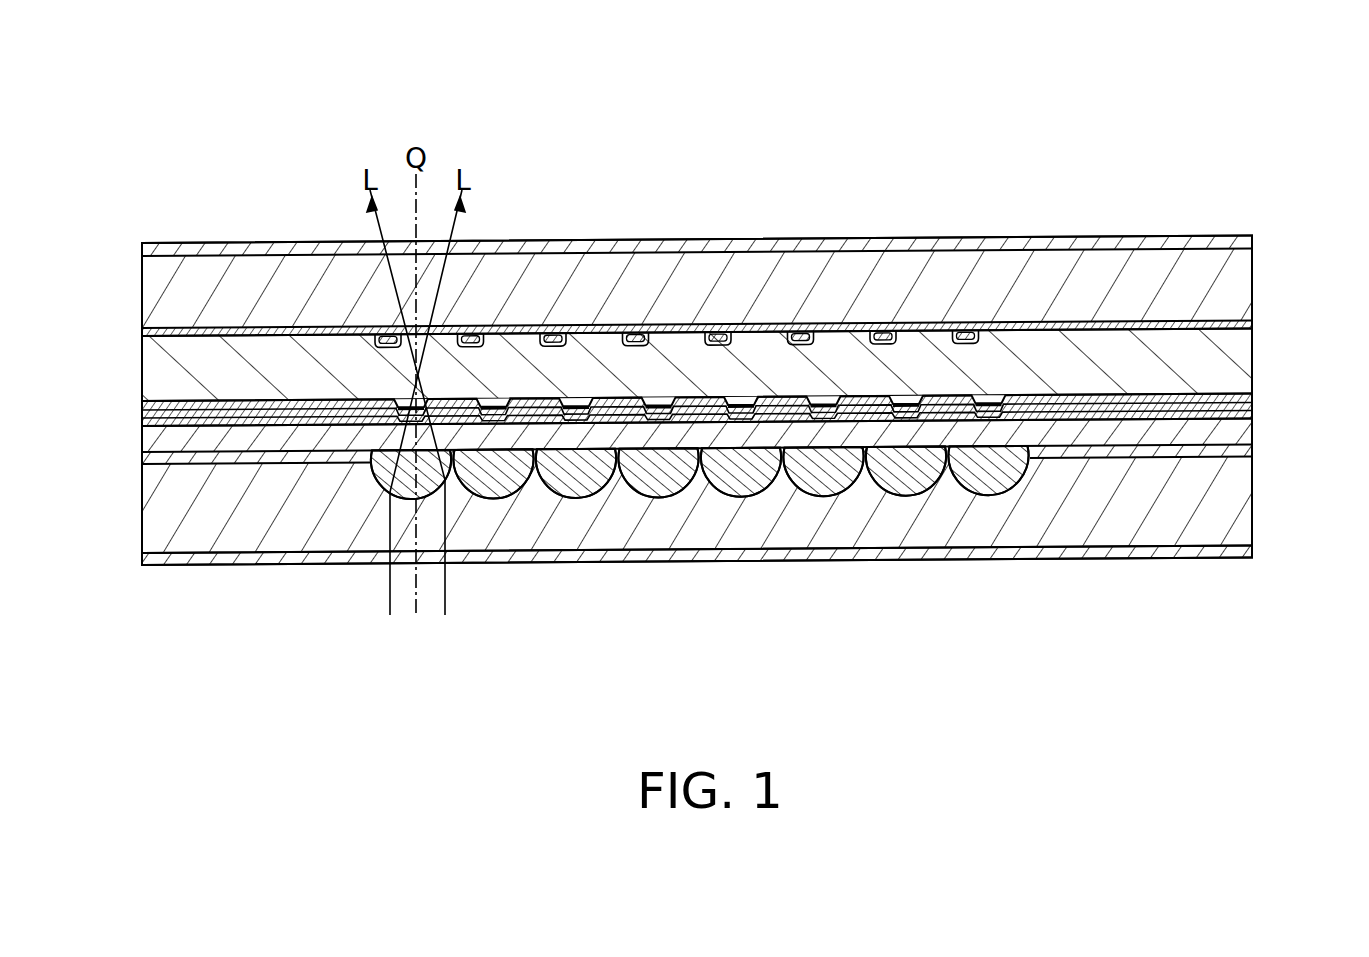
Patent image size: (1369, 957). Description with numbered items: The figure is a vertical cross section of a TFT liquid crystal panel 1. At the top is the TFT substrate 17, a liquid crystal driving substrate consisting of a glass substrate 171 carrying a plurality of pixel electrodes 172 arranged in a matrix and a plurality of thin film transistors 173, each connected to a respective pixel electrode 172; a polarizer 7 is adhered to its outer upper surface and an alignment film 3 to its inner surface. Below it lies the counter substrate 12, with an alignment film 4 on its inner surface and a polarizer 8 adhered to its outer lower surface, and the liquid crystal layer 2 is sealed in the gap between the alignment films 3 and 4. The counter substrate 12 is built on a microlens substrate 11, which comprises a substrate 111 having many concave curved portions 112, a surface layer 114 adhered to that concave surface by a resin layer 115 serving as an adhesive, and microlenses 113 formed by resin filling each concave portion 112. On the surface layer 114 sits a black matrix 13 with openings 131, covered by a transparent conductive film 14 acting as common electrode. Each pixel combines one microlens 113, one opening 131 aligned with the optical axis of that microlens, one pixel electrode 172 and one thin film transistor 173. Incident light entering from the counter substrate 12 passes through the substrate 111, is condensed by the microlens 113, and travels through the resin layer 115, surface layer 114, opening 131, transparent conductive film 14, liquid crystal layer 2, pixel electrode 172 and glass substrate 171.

The liquid crystal panel 1 is at (1195, 225).
The TFT substrate 17 is at (130, 289).
The polarizer 7 is at (1253, 236).
The glass substrate 171 is at (1237, 273).
The alignment film 3 is at (1258, 323).
The thin film transistor 173 is at (630, 328).
The pixel electrode 172 is at (827, 335).
The liquid crystal layer 2 is at (158, 373).
The counter substrate 12 is at (1257, 520).
The alignment film 4 is at (1255, 393).
The transparent conductive film 14 is at (1255, 403).
The black matrix 13 is at (1255, 413).
The opening 131 is at (909, 415).
The microlens substrate 11 is at (121, 428).
The surface layer 114 is at (1237, 435).
The resin layer 115 is at (1253, 453).
The substrate with a concave portion for microlens 111 is at (1237, 505).
The microlens 113 is at (495, 498).
The concave portion for microlens 112 is at (823, 498).
The polarizer 8 is at (1253, 556).